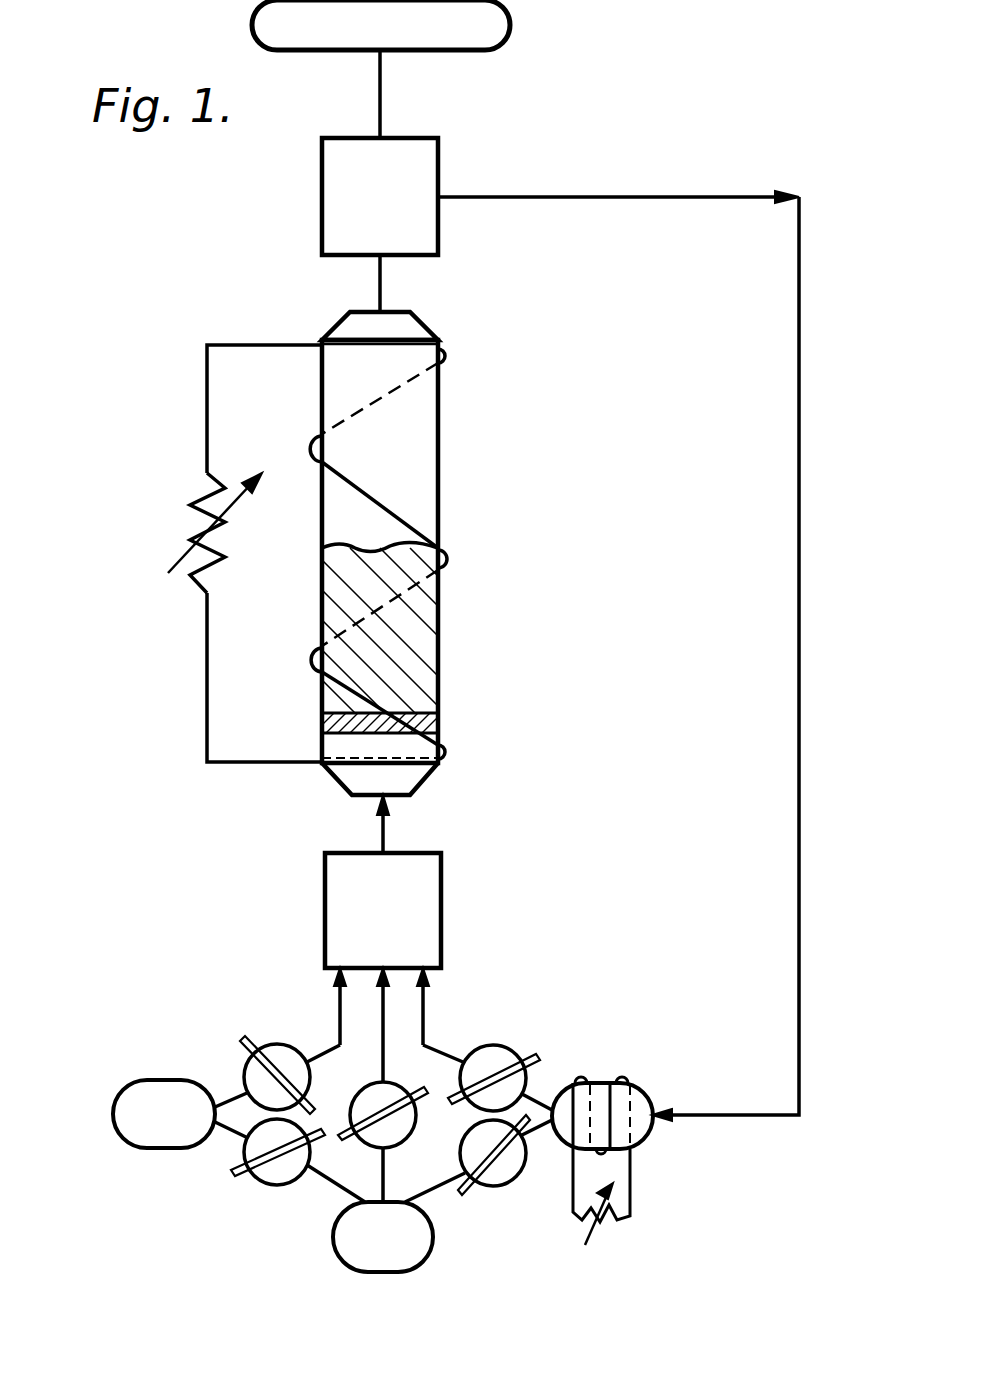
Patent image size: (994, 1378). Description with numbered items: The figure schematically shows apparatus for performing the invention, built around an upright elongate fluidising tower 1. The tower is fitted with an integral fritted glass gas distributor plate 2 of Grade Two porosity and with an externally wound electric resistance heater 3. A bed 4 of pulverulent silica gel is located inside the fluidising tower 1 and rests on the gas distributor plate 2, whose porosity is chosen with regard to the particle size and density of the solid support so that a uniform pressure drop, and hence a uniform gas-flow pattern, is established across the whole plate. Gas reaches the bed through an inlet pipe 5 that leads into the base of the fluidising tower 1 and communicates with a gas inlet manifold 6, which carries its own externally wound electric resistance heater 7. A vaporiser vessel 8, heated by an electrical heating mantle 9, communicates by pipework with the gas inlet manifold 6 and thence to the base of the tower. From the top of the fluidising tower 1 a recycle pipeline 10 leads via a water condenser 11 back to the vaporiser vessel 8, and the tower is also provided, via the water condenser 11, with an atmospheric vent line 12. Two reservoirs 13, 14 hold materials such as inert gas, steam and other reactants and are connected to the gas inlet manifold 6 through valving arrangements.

The fluidising tower 1 is at (423, 442).
The fritted glass gas distributor plate 2 is at (440, 718).
The electric resistance heater 3 is at (207, 408).
The bed of pulverulent silica gel 4 is at (422, 627).
The inlet pipe 5 is at (392, 830).
The gas inlet manifold 6 is at (423, 1020).
The electric resistance heater 7 is at (386, 926).
The vaporiser vessel 8 is at (600, 1102).
The electrical heating mantle 9 is at (632, 1178).
The recycle pipeline 10 is at (800, 292).
The water condenser 11 is at (386, 214).
The atmospheric vent line 12 is at (382, 98).
The reservoir 13 is at (142, 1098).
The reservoir 14 is at (402, 1258).